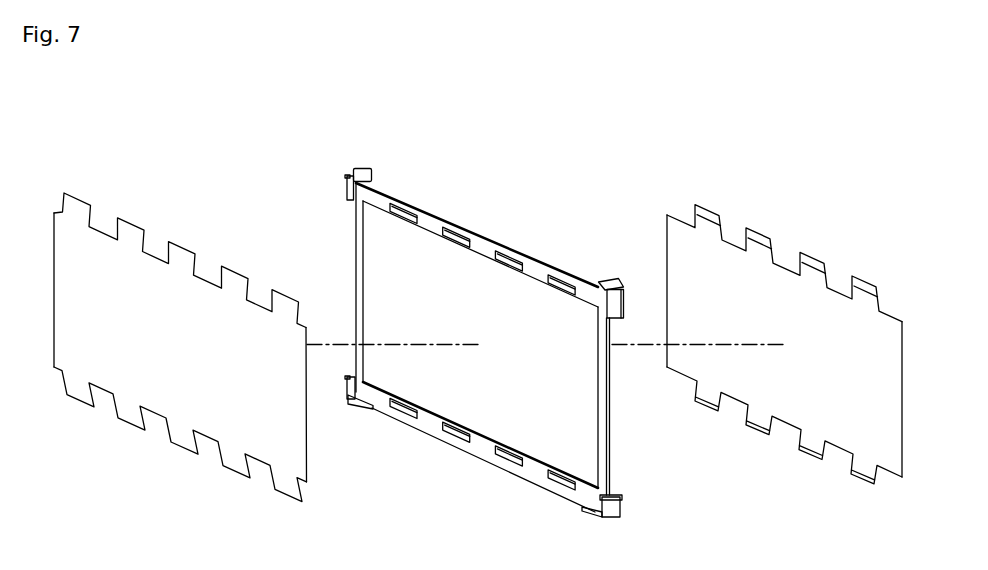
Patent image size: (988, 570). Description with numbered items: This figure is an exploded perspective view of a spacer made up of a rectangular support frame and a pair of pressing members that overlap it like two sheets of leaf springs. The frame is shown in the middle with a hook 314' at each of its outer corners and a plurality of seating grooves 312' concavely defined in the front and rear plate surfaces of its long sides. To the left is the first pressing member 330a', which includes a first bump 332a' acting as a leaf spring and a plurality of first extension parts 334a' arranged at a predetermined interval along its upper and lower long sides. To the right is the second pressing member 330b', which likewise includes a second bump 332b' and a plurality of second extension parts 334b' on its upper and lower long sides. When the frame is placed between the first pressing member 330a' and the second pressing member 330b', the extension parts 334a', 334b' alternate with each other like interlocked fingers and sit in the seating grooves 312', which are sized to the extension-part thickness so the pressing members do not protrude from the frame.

The first pressing member 330a' is at (183, 354).
The first bump 332a' is at (180, 379).
The first extension parts 334a' is at (180, 333).
The seating grooves 312' is at (482, 351).
The hook 314' is at (336, 154).
The second pressing member 330b' is at (805, 355).
The second bump 332b' is at (784, 378).
The second extension parts 334b' is at (784, 337).